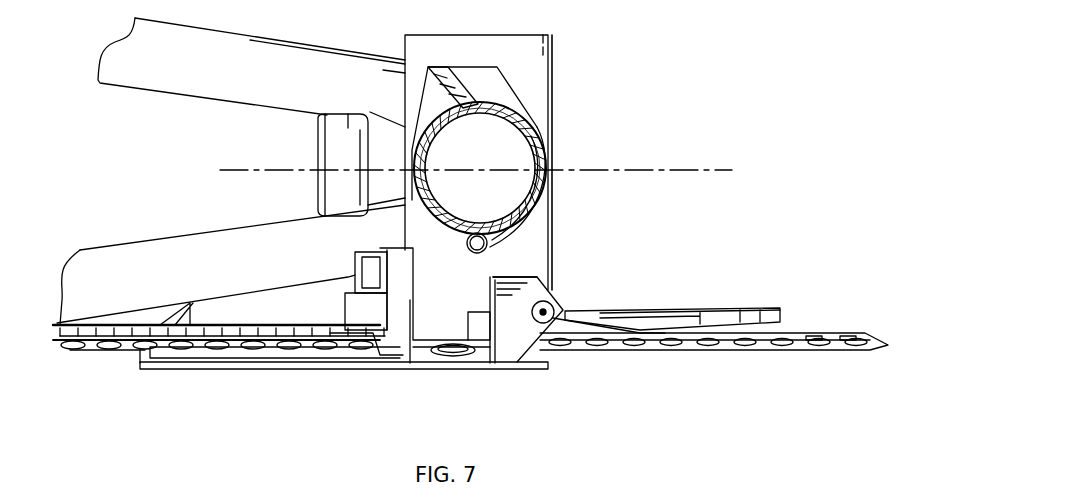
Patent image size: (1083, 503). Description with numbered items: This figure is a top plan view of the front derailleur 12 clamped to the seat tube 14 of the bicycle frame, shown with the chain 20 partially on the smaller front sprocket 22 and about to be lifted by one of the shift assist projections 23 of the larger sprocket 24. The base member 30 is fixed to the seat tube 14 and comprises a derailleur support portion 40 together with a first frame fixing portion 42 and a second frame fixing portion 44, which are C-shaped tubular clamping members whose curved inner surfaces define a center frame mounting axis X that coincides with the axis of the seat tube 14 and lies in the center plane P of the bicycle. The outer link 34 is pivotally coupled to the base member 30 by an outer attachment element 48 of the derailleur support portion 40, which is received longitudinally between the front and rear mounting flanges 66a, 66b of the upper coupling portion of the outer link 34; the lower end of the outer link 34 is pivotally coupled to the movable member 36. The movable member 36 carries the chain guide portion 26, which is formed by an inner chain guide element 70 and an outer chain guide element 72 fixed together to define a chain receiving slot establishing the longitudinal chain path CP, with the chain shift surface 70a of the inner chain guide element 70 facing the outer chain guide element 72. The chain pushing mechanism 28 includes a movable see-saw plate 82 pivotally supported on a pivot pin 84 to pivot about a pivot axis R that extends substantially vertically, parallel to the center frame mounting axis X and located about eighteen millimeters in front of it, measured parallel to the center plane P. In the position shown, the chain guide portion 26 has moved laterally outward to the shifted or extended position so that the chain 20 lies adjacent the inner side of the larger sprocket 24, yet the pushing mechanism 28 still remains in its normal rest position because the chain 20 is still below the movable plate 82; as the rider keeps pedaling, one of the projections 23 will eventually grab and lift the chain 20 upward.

The front derailleur 12 is at (588, 275).
The seat tube 14 is at (532, 124).
The chain 20 is at (62, 340).
The smaller front sprocket 22 is at (598, 313).
The shift assist projections 23 is at (673, 336).
The larger sprocket 24 is at (97, 349).
The chain guide portion 26 is at (229, 291).
The chain pushing mechanism 28 is at (557, 285).
The base member 30 is at (528, 87).
The outer link 34 is at (411, 362).
The movable member 36 is at (518, 270).
The derailleur support portion 40 is at (440, 268).
The first frame fixing portion 42 is at (407, 150).
The second frame fixing portion 44 is at (540, 148).
The outer attachment element 48 is at (446, 318).
The front mounting flange 66a is at (480, 340).
The rear mounting flange 66b is at (393, 327).
The inner chain guide element 70 is at (260, 313).
The chain shift surface 70a is at (297, 330).
The outer chain guide element 72 is at (288, 363).
The movable plate 82 is at (637, 314).
The pivot pin 84 is at (545, 303).
The chain path CP is at (256, 352).
The center plane P is at (715, 170).
The pivot axis R is at (553, 323).
The center frame mounting axis X is at (479, 172).